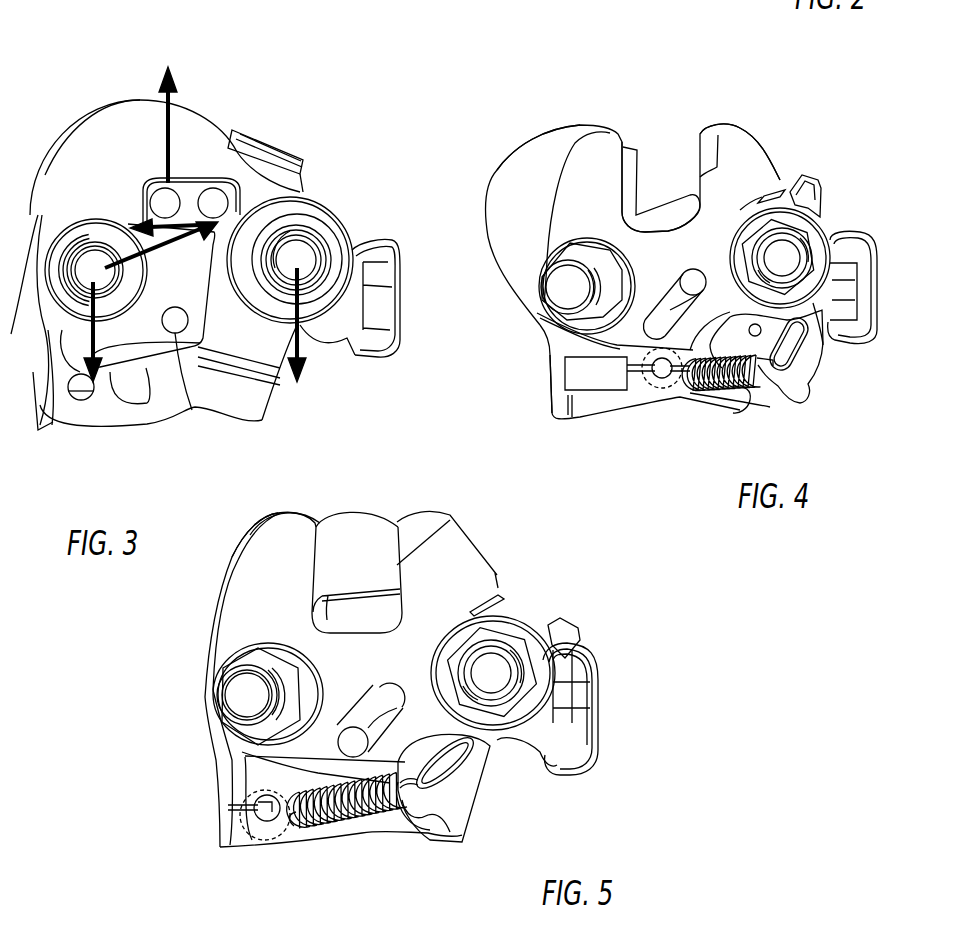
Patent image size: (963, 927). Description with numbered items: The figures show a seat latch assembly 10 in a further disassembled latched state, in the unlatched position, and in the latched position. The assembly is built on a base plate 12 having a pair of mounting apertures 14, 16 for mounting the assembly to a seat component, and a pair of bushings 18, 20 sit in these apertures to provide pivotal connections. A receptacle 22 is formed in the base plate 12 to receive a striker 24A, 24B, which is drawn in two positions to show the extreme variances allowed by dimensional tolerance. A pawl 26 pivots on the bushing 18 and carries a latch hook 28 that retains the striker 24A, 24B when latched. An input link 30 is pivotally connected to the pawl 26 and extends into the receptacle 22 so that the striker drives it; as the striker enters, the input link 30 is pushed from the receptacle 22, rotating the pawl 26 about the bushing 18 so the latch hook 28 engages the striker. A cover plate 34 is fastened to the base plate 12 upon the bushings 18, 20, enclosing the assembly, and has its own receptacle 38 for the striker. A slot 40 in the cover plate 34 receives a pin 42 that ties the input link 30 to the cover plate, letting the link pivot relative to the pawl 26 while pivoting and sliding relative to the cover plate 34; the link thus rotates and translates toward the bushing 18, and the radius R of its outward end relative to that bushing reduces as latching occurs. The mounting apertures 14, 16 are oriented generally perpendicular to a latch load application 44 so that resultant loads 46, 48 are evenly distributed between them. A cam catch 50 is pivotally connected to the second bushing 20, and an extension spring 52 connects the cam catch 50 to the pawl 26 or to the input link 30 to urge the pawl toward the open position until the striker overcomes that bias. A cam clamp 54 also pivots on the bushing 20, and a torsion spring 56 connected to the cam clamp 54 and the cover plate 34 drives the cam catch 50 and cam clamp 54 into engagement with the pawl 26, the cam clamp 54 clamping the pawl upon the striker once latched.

In FIG. 3, the seat latch assembly 10 is at (318, 112).
In FIG. 4, the seat latch assembly 10 is at (772, 110).
In FIG. 5, the seat latch assembly 10 is at (507, 529).
In FIG. 3, the base plate 12 is at (263, 166).
In FIG. 4, the base plate 12 is at (840, 250).
In FIG. 5, the base plate 12 is at (552, 737).
In FIG. 3, the mounting aperture 14 is at (50, 353).
In FIG. 3, the mounting aperture 16 is at (318, 240).
In FIG. 3, the bushing 18 is at (53, 263).
In FIG. 3, the bushing 20 is at (343, 247).
In FIG. 3, the receptacle 22 is at (132, 200).
In FIG. 4, the receptacle 22 is at (633, 170).
In FIG. 5, the receptacle 22 is at (330, 625).
In FIG. 3, the striker 24A is at (163, 180).
In FIG. 3, the striker 24B is at (237, 193).
In FIG. 3, the pawl 26 is at (58, 176).
In FIG. 4, the pawl 26 is at (500, 170).
In FIG. 5, the pawl 26 is at (328, 523).
In FIG. 3, the latch hook 28 is at (197, 187).
In FIG. 4, the latch hook 28 is at (570, 135).
In FIG. 5, the latch hook 28 is at (377, 547).
In FIG. 3, the input link 30 is at (146, 350).
In FIG. 4, the input link 30 is at (613, 360).
In FIG. 5, the input link 30 is at (315, 800).
In FIG. 4, the cover plate 34 is at (725, 310).
In FIG. 5, the cover plate 34 is at (430, 727).
In FIG. 4, the receptacle 38 is at (718, 152).
In FIG. 5, the receptacle 38 is at (453, 518).
In FIG. 4, the slot 40 is at (645, 345).
In FIG. 5, the slot 40 is at (395, 828).
In FIG. 3, the pin 42 is at (180, 335).
In FIG. 4, the pin 42 is at (682, 393).
In FIG. 5, the pin 42 is at (377, 813).
In FIG. 3, the latch load application 44 is at (165, 111).
In FIG. 3, the resultant load 46 is at (104, 332).
In FIG. 3, the resultant load 48 is at (295, 339).
In FIG. 3, the radius R is at (161, 251).
In FIG. 4, the cam catch 50 is at (818, 343).
In FIG. 5, the cam catch 50 is at (478, 768).
In FIG. 4, the extension spring 52 is at (750, 385).
In FIG. 5, the extension spring 52 is at (338, 825).
In FIG. 4, the cam clamp 54 is at (822, 192).
In FIG. 5, the cam clamp 54 is at (578, 637).
In FIG. 4, the torsion spring 56 is at (775, 193).
In FIG. 5, the torsion spring 56 is at (490, 603).